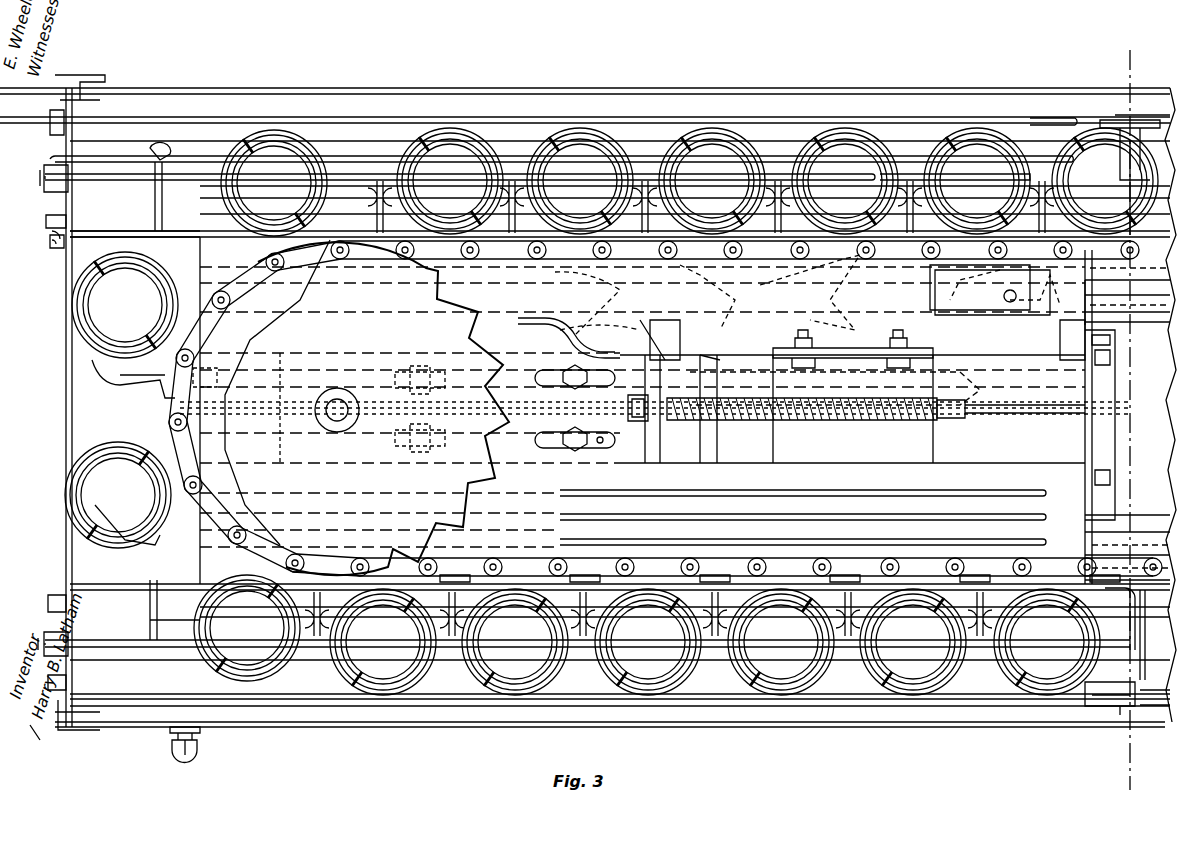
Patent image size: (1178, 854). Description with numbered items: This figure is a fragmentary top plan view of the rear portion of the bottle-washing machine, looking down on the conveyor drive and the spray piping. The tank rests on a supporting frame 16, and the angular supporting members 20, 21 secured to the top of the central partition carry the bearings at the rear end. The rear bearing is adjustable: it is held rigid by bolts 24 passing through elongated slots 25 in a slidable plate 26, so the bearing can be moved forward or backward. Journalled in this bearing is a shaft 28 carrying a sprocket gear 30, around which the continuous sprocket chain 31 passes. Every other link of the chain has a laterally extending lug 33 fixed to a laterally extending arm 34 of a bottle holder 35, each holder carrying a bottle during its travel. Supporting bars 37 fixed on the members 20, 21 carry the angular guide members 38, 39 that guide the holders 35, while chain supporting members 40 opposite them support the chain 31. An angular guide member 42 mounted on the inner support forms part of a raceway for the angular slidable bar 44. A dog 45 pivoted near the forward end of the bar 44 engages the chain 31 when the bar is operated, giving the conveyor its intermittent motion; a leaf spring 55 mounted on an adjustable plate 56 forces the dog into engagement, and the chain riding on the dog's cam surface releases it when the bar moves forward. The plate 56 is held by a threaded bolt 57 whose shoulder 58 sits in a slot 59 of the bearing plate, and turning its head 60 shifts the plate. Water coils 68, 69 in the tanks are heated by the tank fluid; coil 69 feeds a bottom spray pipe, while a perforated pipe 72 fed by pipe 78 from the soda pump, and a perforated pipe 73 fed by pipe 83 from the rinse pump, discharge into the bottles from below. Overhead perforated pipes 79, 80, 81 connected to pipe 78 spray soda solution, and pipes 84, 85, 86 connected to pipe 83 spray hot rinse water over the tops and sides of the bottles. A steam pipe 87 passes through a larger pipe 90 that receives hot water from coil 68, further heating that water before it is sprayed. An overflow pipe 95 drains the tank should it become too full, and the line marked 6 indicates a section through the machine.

The section line 6 is at (1130, 50).
The supporting frame 16 is at (70, 85).
The angular supporting member 20 is at (85, 436).
The angular supporting member 21 is at (80, 375).
The bolts 24 is at (570, 372).
The elongated slots 25 is at (603, 442).
The slidable plate 26 is at (545, 450).
The shaft 28 is at (337, 422).
The sprocket gear 30 is at (210, 432).
The sprocket chain 31 is at (828, 262).
The laterally extending lug 33 is at (560, 235).
The laterally extending arm 34 is at (512, 245).
The bottle holder 35 is at (700, 132).
The supporting bars 37 is at (1085, 423).
The angular guide member 38 is at (1105, 118).
The angular guide member 39 is at (1095, 708).
The chain supporting members 40 is at (1100, 543).
The angular guide member 42 is at (1130, 325).
The slidable bar 44 is at (867, 340).
The dog 45 is at (1008, 333).
The leaf spring 55 is at (690, 360).
The adjustable plate 56 is at (895, 455).
The threaded bolt 57 is at (832, 421).
The shoulder 58 is at (638, 421).
The slot 59 is at (662, 421).
The head 60 is at (955, 418).
The water coil 68 is at (835, 310).
The water coil 69 is at (800, 490).
The perforated pipe 72 is at (80, 656).
The perforated pipe 73 is at (120, 172).
The pipe 78 is at (70, 640).
The perforated pipe 79 is at (150, 695).
The perforated pipe 80 is at (128, 650).
The perforated pipe 81 is at (125, 585).
The pipe 83 is at (44, 188).
The perforated pipe 84 is at (135, 215).
The perforated pipe 85 is at (345, 160).
The perforated pipe 86 is at (365, 92).
The steam pipe 87 is at (168, 150).
The pipe 90 is at (975, 372).
The overflow pipe 95 is at (198, 748).